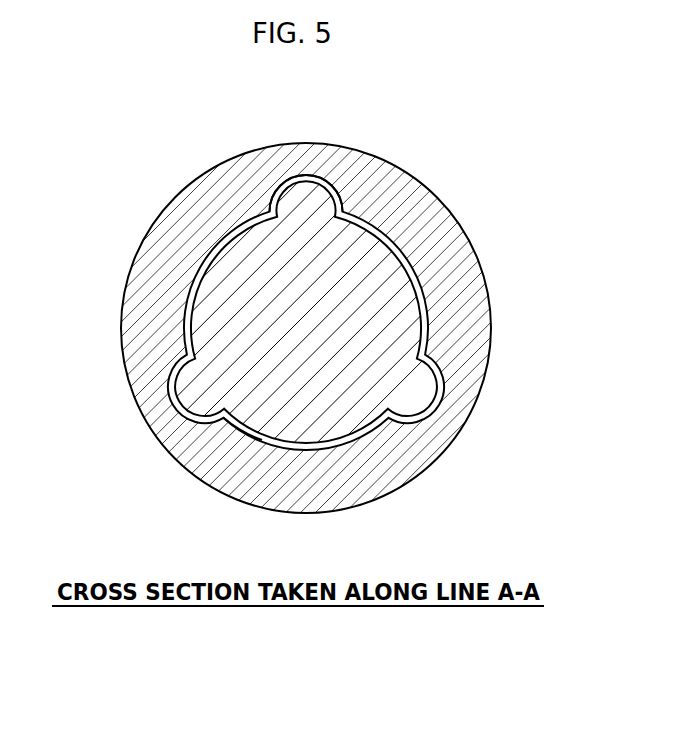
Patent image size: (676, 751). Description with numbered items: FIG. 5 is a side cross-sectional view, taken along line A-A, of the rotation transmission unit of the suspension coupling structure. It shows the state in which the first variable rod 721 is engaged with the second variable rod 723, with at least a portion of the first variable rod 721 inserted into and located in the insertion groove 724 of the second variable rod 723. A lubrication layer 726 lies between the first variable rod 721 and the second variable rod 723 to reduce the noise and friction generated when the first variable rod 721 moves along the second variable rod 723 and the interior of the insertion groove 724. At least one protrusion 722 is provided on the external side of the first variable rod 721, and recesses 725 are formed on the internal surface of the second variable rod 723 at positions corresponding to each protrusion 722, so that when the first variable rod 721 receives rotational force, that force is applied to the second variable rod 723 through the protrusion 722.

The first variable rod 721 is at (234, 297).
The protrusion 722 is at (314, 203).
The second variable rod 723 is at (176, 204).
The insertion groove 724 is at (241, 434).
The recess 725 is at (305, 178).
The lubrication layer 726 is at (408, 273).